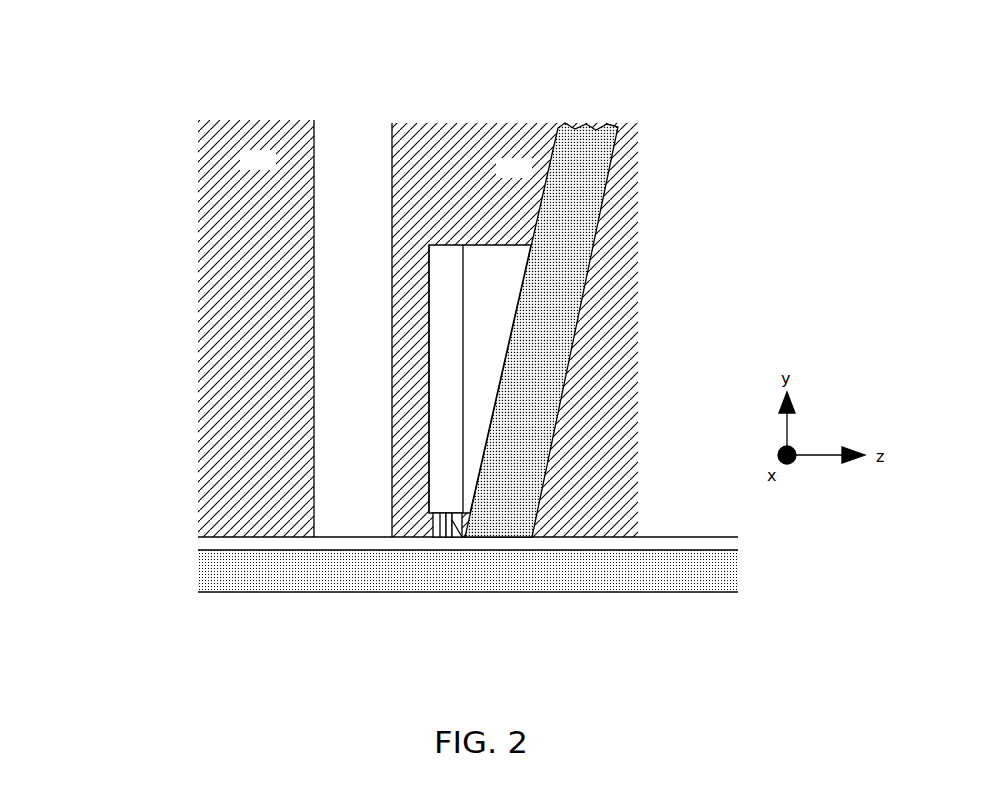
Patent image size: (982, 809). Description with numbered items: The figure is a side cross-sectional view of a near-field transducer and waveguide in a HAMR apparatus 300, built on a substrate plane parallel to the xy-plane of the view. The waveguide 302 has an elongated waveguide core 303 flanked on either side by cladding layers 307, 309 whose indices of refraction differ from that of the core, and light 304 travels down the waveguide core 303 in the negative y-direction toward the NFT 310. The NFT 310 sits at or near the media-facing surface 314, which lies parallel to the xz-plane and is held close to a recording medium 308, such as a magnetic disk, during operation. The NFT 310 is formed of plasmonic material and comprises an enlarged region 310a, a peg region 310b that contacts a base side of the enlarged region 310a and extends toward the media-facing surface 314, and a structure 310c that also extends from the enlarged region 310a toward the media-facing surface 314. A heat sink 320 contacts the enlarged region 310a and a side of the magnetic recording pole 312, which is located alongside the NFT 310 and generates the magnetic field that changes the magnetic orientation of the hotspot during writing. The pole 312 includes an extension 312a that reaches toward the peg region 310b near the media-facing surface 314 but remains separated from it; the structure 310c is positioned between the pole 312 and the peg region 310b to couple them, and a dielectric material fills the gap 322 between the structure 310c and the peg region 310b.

The HAMR apparatus 300 is at (157, 147).
The waveguide 302 is at (410, 48).
The waveguide core 303 is at (377, 126).
The light 304 is at (358, 206).
The cladding layer 307 is at (256, 328).
The recording medium 308 is at (212, 565).
The cladding layer 309 is at (517, 368).
The NFT 310 is at (435, 368).
The enlarged region 310a is at (435, 475).
The peg region 310b is at (442, 525).
The structure 310c is at (457, 537).
The magnetic recording pole 312 is at (598, 212).
The extension 312a is at (467, 527).
The media-facing surface 314 is at (603, 538).
The heat sink 320 is at (447, 230).
The gap 322 is at (452, 528).